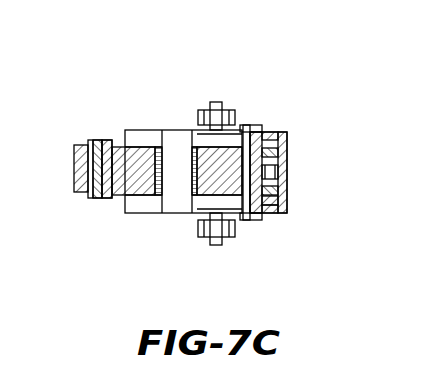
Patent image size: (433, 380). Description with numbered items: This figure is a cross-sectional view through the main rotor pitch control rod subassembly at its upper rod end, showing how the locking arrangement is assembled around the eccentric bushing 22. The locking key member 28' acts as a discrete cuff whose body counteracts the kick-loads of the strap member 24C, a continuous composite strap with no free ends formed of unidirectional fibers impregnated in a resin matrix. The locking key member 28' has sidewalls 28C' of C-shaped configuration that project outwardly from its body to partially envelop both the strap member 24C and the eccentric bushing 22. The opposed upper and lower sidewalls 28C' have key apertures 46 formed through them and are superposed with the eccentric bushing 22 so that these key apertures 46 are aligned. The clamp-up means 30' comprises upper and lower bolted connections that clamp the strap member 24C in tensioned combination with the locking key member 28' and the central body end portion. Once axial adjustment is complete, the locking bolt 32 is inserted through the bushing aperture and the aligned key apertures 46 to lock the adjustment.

The eccentric bushing 22 is at (188, 131).
The clamp-up means 30' is at (216, 79).
The locking bolt 32 is at (252, 118).
The locking key member 28' is at (302, 164).
The sidewalls 28C' is at (305, 116).
The key apertures 46 is at (280, 182).
The strap member 24C is at (283, 198).